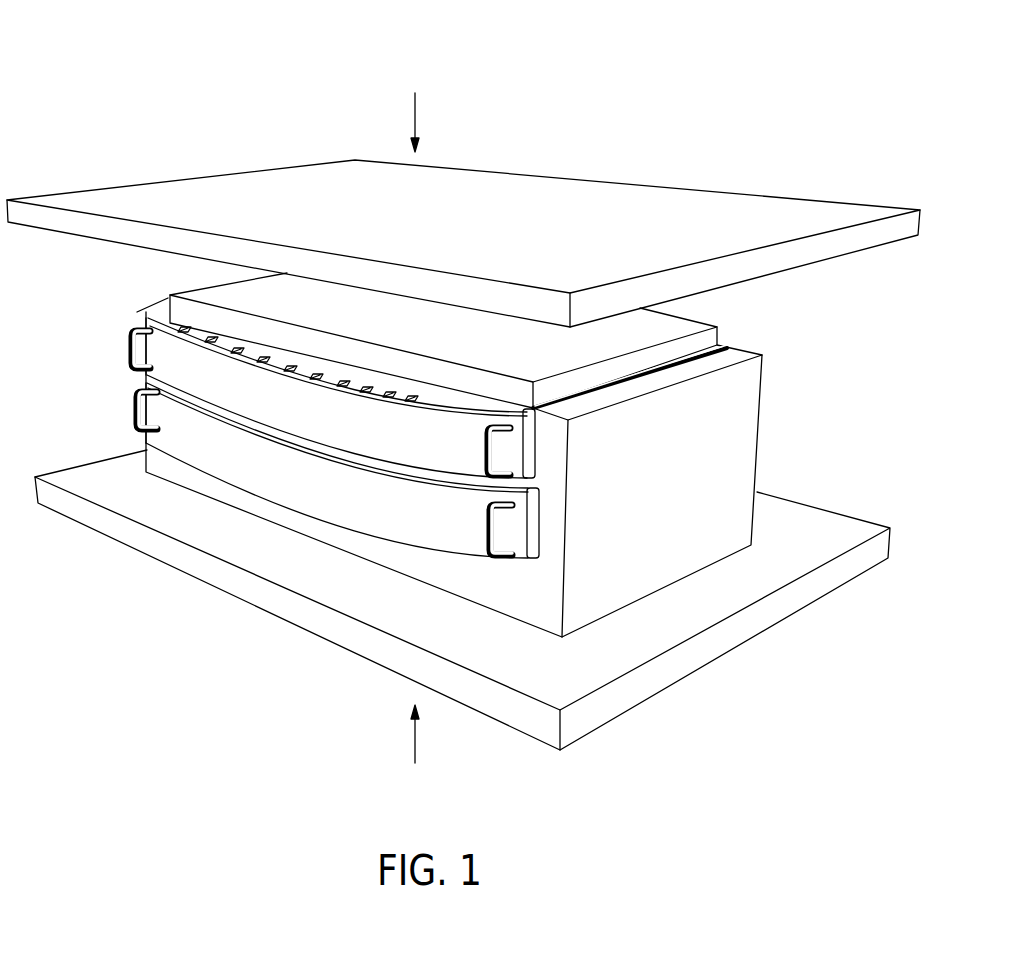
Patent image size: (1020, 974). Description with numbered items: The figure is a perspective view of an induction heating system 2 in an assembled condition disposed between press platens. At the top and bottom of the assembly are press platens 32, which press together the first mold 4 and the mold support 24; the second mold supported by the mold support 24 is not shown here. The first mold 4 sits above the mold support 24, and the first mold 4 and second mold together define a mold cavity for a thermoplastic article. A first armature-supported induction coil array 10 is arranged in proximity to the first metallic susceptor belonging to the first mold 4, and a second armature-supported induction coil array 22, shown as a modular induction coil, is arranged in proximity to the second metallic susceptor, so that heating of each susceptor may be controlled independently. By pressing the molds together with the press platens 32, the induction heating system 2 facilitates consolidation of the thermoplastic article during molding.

The induction heating system 2 is at (122, 104).
The press platen 32 is at (270, 181).
The first mold 4 is at (230, 297).
The mold support 24 is at (752, 407).
The first armature-supported induction coil array 10 is at (302, 433).
The second armature-supported induction coil array 22 is at (315, 507).